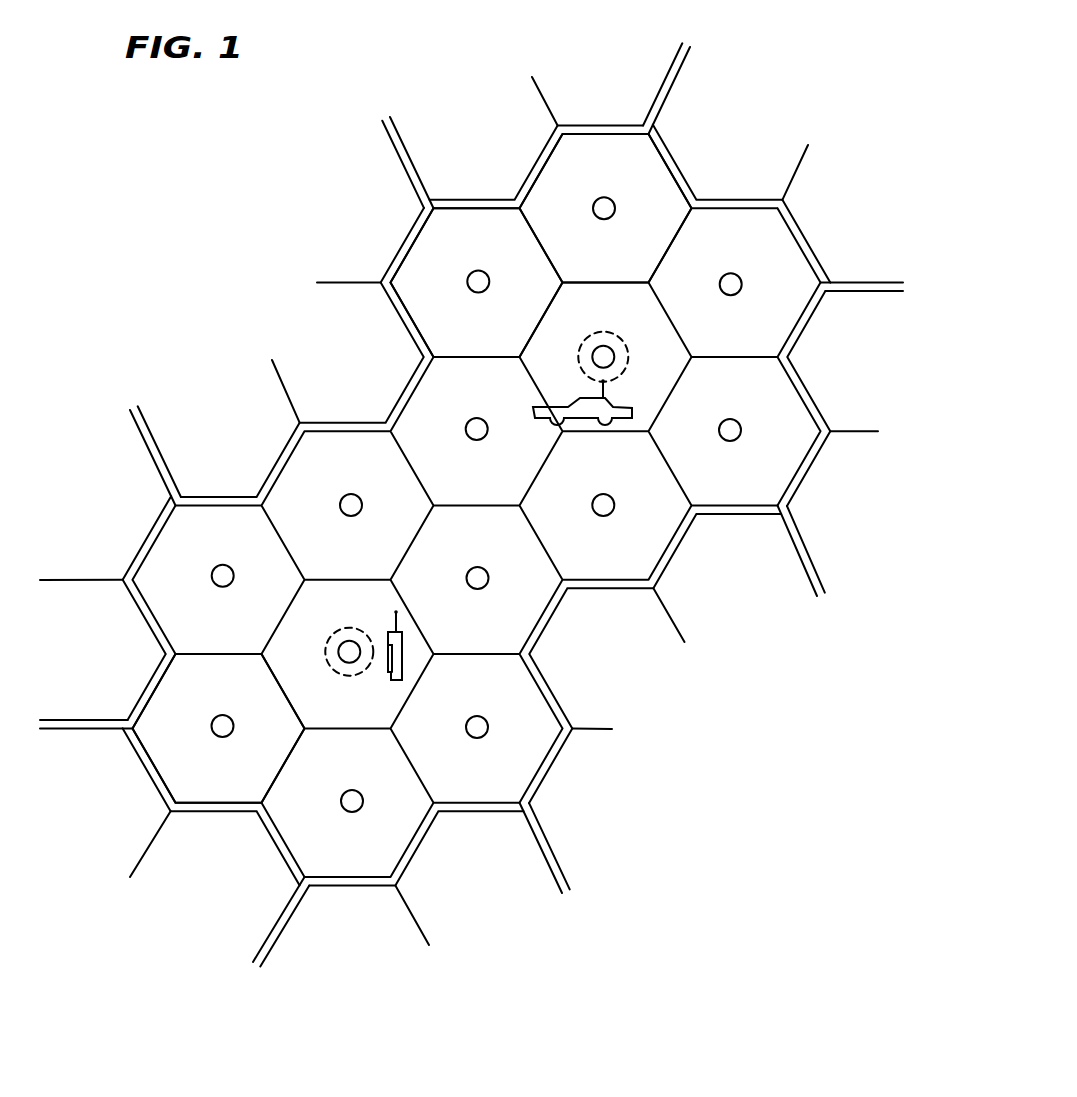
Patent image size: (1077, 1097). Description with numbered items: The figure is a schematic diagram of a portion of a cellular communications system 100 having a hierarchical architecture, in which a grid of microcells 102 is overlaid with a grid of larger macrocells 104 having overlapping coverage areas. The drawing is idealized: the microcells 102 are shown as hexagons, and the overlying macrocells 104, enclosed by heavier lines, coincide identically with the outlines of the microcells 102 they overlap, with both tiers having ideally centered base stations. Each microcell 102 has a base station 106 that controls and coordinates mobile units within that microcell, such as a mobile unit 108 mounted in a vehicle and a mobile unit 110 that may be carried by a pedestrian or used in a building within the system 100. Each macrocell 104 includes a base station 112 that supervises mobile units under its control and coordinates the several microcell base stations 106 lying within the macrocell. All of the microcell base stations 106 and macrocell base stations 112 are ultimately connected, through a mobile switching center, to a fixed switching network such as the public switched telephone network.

The cellular communications system 100 is at (183, 290).
The microcell 102 is at (723, 215).
The macrocell 104 is at (728, 518).
The base station 106 is at (720, 284).
The mobile unit 108 is at (578, 415).
The mobile unit 110 is at (388, 672).
The base station 112 is at (628, 345).